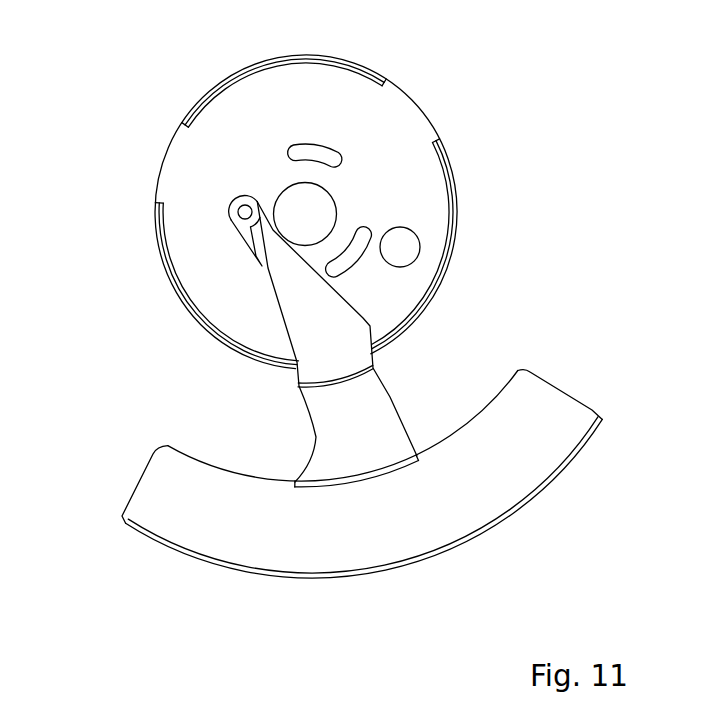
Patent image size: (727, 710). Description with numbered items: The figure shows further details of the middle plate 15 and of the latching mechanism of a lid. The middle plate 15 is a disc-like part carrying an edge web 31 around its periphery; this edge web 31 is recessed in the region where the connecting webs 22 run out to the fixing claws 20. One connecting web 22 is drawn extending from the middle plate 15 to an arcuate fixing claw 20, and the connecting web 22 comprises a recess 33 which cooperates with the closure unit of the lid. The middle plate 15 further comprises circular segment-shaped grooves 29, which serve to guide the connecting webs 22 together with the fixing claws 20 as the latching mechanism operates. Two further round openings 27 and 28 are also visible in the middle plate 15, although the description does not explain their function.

The middle plate 15 is at (418, 162).
The fixing claw 20 is at (495, 472).
The connecting web 22 is at (370, 417).
The central opening 27 is at (312, 207).
The circular hole 28 is at (410, 252).
The circular segment-shaped groove 29 is at (327, 150).
The edge web 31 is at (195, 101).
The recess 33 is at (238, 213).